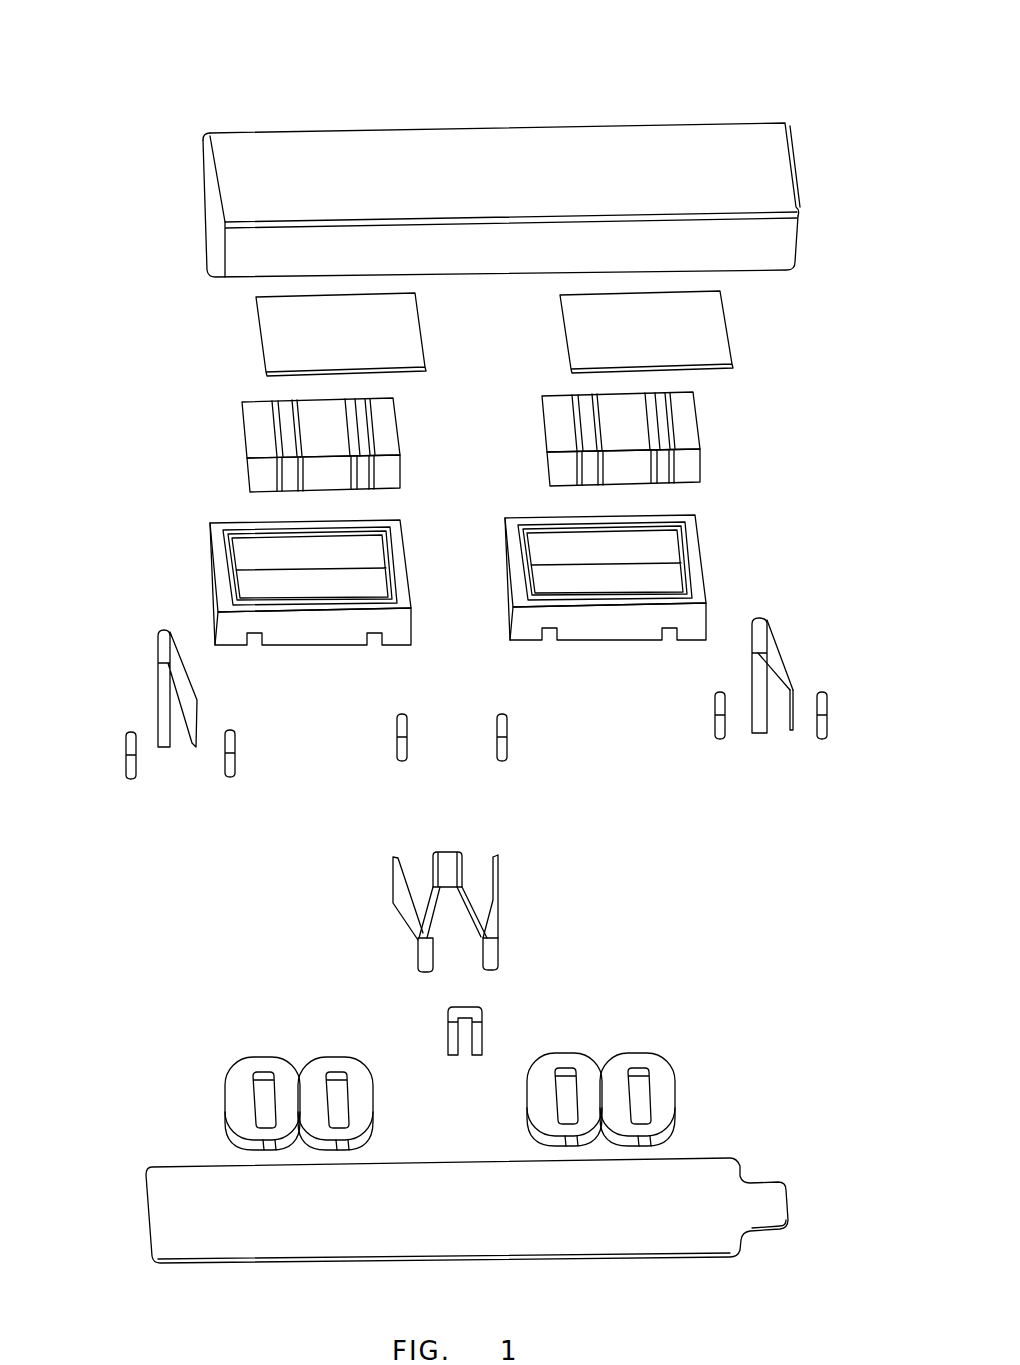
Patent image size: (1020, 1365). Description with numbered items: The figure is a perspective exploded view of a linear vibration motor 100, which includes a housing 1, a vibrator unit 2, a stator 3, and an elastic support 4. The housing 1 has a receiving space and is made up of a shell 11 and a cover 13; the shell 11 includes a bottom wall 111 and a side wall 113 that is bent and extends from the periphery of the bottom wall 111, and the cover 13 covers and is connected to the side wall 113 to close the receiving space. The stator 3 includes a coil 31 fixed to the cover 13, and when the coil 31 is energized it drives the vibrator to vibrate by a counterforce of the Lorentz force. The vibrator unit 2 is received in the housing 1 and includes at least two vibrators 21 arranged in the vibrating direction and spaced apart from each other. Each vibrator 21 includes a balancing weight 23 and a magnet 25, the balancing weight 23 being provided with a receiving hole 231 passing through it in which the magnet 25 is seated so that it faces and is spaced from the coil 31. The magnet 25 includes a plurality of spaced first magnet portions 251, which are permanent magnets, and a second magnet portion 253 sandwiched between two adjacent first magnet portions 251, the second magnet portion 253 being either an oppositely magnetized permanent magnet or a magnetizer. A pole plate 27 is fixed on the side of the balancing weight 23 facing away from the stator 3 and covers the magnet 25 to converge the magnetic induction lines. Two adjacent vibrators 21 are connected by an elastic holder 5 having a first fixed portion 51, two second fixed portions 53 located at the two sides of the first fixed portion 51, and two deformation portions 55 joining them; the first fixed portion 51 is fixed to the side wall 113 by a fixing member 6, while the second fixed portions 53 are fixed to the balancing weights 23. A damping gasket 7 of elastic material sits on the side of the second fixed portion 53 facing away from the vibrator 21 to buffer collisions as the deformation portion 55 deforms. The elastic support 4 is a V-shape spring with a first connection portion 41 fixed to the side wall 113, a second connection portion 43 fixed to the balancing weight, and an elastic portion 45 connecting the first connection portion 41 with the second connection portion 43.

The linear vibration motor 100 is at (442, 28).
The housing 1 is at (730, 160).
The shell 11 is at (101, 80).
The bottom wall 111 is at (240, 143).
The side wall 113 is at (213, 222).
The cover 13 is at (185, 1232).
The vibrator unit 2 is at (755, 348).
The vibrator 21 is at (105, 335).
The balancing weight 23 is at (216, 552).
The receiving hole 231 is at (665, 577).
The magnet 25 is at (152, 380).
The first magnet portion 251 is at (325, 412).
The second magnet portion 253 is at (290, 447).
The pole plate 27 is at (275, 332).
The stator 3 is at (667, 1120).
The coil 31 is at (240, 1100).
The elastic support 4 is at (876, 540).
The first connection portion 41 is at (795, 693).
The second connection portion 43 is at (780, 642).
The elastic portion 45 is at (760, 618).
The elastic holder 5 is at (669, 790).
The first fixed portion 51 is at (455, 852).
The second fixed portion 53 is at (498, 857).
The deformation portion 55 is at (498, 952).
The fixing member 6 is at (447, 1013).
The damping gasket 7 is at (128, 753).